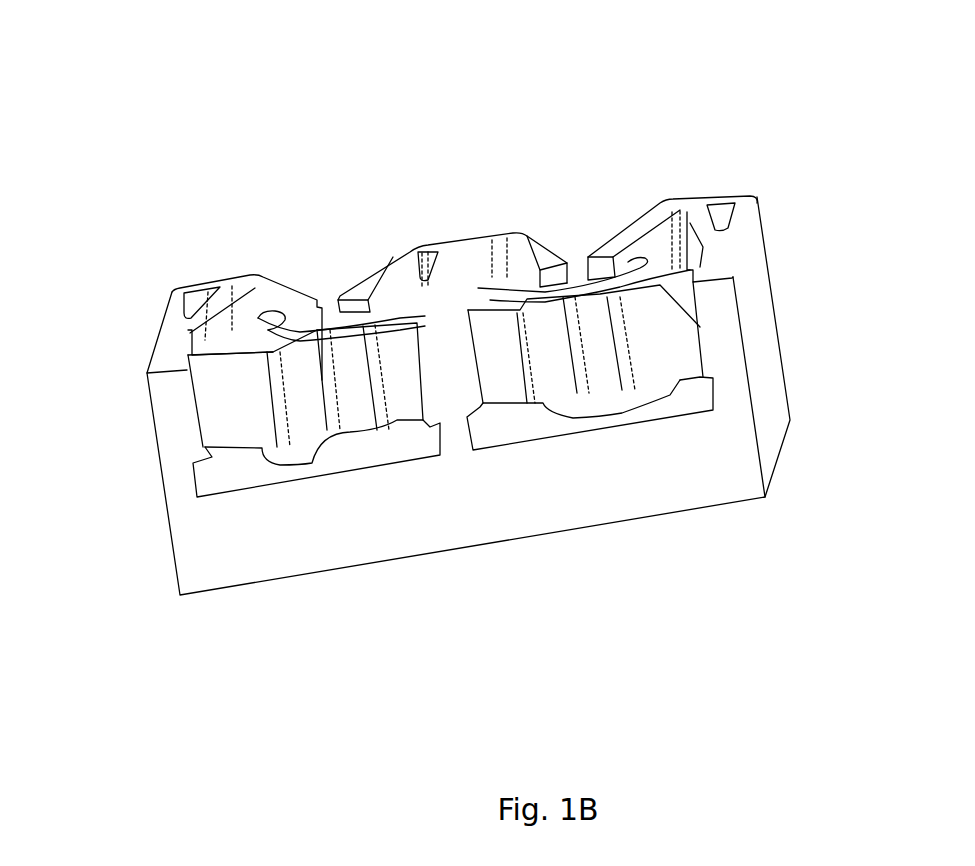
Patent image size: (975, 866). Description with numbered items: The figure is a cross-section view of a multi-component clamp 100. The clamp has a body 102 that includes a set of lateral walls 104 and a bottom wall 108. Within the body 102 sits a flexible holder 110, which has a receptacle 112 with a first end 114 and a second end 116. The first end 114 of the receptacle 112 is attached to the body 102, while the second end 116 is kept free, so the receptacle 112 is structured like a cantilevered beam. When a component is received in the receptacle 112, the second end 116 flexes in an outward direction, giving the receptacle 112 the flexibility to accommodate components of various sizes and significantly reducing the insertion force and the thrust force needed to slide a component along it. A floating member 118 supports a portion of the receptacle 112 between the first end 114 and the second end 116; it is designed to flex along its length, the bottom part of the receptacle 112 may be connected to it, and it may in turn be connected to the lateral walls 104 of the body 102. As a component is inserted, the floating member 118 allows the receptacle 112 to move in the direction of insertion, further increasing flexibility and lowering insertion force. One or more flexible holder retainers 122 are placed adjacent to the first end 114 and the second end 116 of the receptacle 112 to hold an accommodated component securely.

The multi-component clamp 100 is at (490, 190).
The body 102 is at (728, 185).
The lateral walls 104 is at (150, 350).
The bottom wall 108 is at (245, 272).
The flexible holder 110 is at (577, 255).
The receptacle 112 is at (612, 270).
The first end 114 is at (487, 282).
The second end 116 is at (600, 285).
The floating member 118 is at (650, 275).
The flexible holder retainer 122 is at (375, 270).